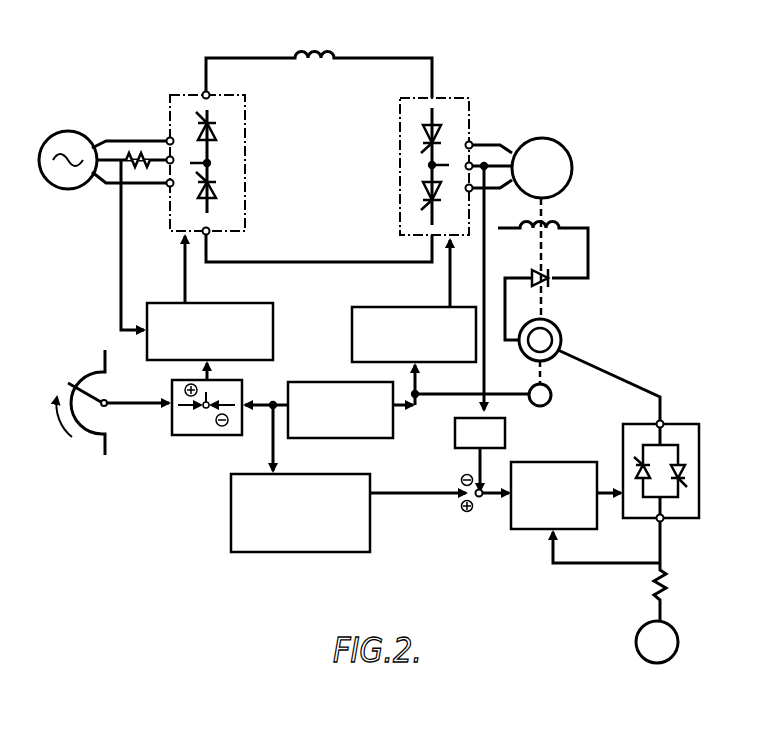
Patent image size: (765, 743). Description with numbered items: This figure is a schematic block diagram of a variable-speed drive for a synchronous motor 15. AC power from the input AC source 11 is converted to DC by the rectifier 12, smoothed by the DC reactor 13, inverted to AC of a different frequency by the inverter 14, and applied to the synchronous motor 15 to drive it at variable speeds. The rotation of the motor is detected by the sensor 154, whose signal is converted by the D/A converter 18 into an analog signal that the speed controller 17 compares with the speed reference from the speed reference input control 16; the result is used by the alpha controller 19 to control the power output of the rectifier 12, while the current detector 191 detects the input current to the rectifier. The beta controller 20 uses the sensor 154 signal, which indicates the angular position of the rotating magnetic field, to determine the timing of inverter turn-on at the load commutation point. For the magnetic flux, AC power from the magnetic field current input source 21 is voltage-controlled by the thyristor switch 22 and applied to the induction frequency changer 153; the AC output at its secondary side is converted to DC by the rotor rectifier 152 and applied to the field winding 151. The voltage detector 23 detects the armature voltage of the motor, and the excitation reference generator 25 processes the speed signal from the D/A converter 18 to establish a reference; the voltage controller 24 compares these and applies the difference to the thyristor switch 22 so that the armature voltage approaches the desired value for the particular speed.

The input AC source 11 is at (71, 130).
The current detector 191 is at (128, 150).
The rectifier 12 is at (181, 92).
The DC reactor 13 is at (327, 52).
The inverter 14 is at (460, 82).
The synchronous motor 15 is at (552, 140).
The field winding 151 is at (560, 222).
The rotor rectifier 152 is at (549, 276).
The induction frequency changer 153 is at (559, 333).
The sensor 154 is at (552, 396).
The speed reference input control 16 is at (93, 375).
The speed controller 17 is at (188, 437).
The D/A converter 18 is at (315, 380).
The alpha controller 19 is at (228, 303).
The beta controller 20 is at (391, 307).
The magnetic field current input source 21 is at (636, 642).
The thyristor switch 22 is at (688, 424).
The voltage detector 23 is at (462, 453).
The voltage controller 24 is at (561, 461).
The excitation reference generator 25 is at (287, 556).